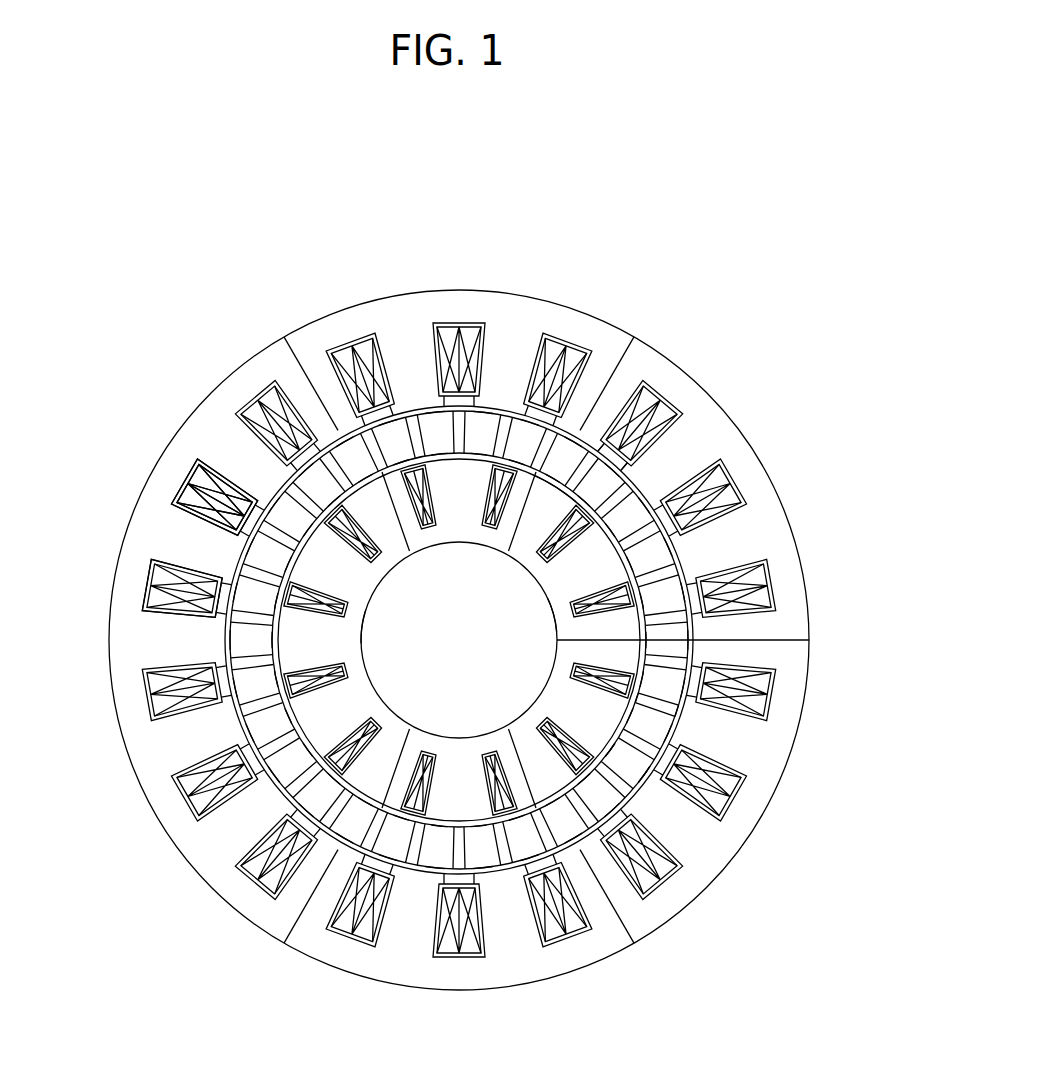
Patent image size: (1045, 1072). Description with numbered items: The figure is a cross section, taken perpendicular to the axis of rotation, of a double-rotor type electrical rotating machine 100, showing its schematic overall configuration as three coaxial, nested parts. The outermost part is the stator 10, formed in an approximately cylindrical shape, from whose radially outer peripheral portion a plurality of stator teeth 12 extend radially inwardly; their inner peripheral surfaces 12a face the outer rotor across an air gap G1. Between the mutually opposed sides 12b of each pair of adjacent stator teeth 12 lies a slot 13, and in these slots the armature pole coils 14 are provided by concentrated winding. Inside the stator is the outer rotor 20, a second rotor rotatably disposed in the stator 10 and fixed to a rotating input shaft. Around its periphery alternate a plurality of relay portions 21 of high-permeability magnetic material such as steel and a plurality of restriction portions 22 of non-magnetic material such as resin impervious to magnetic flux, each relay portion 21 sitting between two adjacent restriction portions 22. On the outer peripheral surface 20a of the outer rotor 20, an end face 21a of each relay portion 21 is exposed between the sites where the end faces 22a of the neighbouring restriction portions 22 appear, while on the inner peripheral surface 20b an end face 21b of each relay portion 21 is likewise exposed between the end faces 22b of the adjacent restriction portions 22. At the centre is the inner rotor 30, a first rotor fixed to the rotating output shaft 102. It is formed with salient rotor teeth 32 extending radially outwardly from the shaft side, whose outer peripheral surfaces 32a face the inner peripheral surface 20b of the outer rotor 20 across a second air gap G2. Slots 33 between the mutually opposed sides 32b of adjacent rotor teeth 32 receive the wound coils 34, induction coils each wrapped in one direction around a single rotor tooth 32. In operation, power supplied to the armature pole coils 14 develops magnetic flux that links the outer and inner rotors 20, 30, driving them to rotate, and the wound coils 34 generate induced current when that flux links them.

The electrical rotating machine 100 is at (621, 271).
The stator 10 is at (216, 427).
The stator teeth 12 is at (180, 553).
The inner peripheral surfaces 12a is at (177, 528).
The mutually opposed sides 12b is at (177, 508).
The slots 13 is at (166, 617).
The armature pole coils 14 is at (182, 712).
The outer rotor 20 is at (583, 846).
The outer peripheral surface 20a is at (524, 868).
The inner peripheral surface 20b is at (468, 827).
The relay portions 21 is at (640, 795).
The end face 21a is at (612, 818).
The end face 21b is at (578, 790).
The restriction portions 22 is at (665, 710).
The end faces 22a is at (690, 700).
The end faces 22b is at (628, 703).
The inner rotor 30 is at (322, 658).
The rotor teeth 32 is at (352, 587).
The outer peripheral surfaces 32a is at (562, 608).
The mutually opposed sides 32b is at (352, 626).
The slots 33 is at (513, 490).
The wound coils 34 is at (434, 503).
The rotating output shaft 102 is at (442, 658).
The air gap G1 is at (640, 468).
The air gap G2 is at (558, 480).